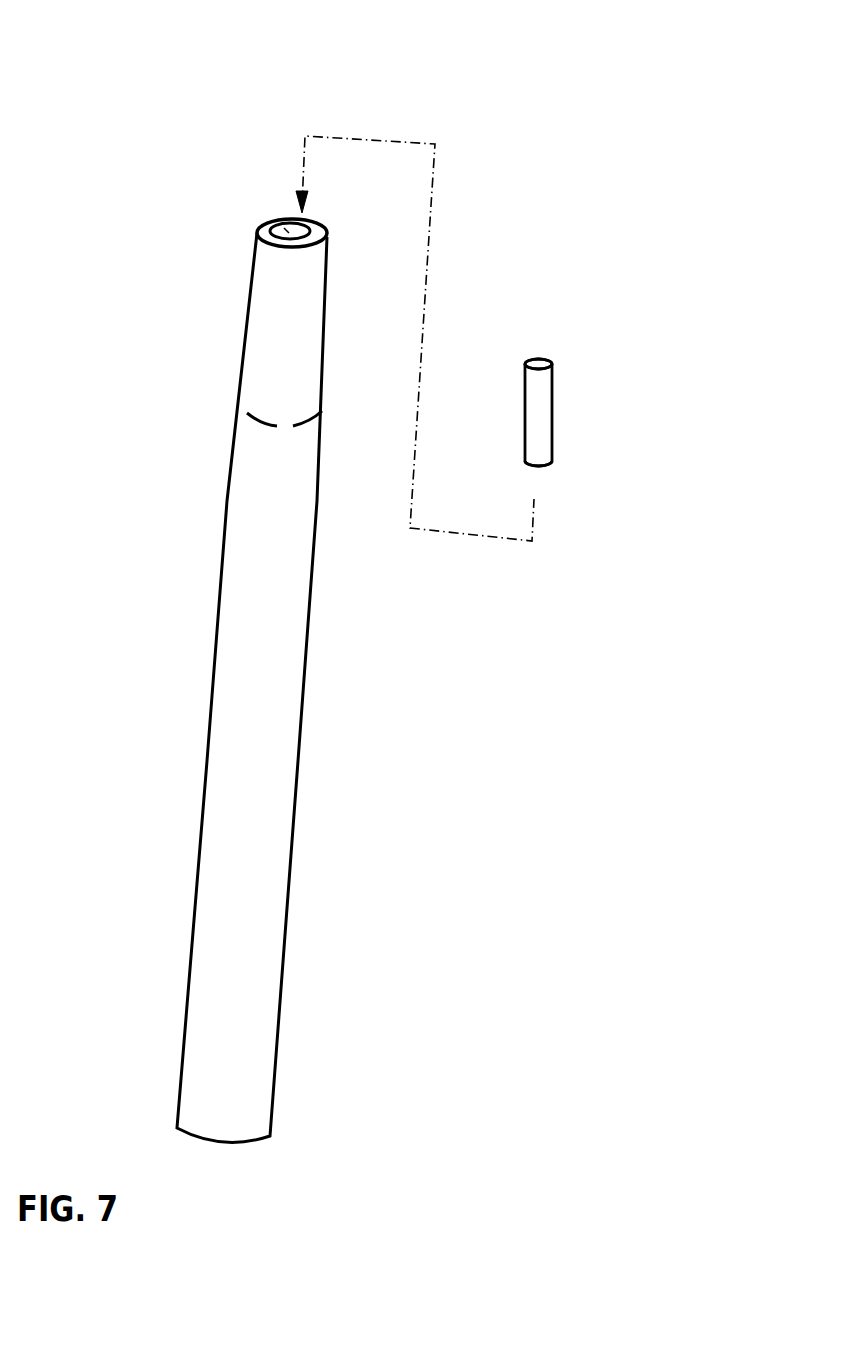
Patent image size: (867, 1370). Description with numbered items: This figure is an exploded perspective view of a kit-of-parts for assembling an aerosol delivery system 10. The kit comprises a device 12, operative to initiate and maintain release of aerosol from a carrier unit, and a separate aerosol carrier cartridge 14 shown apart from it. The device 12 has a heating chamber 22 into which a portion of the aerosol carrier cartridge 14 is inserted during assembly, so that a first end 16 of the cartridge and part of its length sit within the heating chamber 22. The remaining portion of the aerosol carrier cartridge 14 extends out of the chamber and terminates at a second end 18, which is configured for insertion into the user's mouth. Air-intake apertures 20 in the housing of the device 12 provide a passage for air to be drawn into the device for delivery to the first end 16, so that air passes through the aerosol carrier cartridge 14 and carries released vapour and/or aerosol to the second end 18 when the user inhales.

The aerosol delivery system 10 is at (143, 38).
The device 12 is at (237, 795).
The aerosol carrier cartridge 14 is at (558, 413).
The first end 16 is at (535, 464).
The second end 18 is at (540, 356).
The air-intake apertures 20 is at (252, 417).
The heating chamber 22 is at (273, 217).